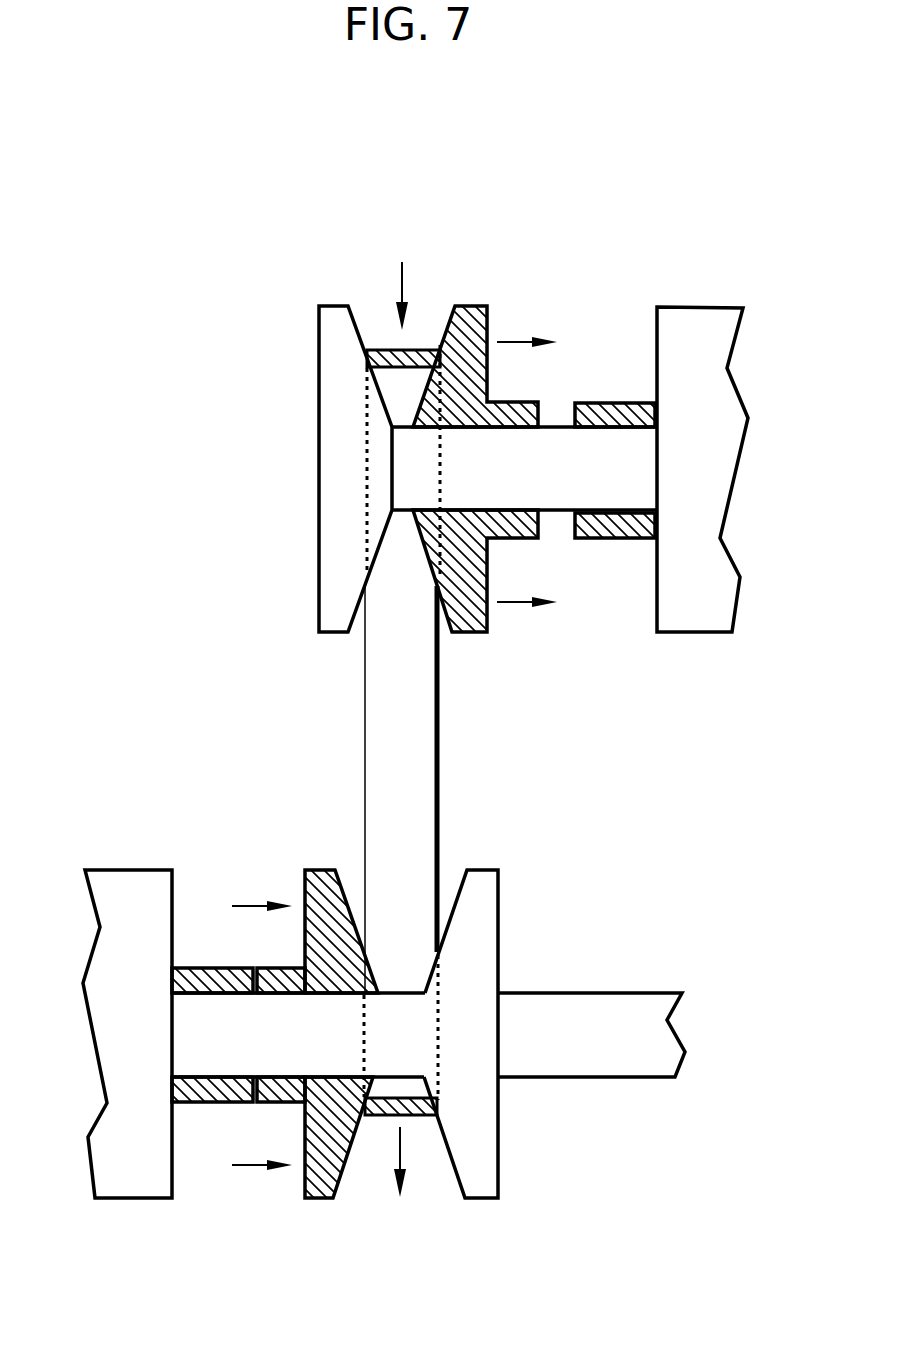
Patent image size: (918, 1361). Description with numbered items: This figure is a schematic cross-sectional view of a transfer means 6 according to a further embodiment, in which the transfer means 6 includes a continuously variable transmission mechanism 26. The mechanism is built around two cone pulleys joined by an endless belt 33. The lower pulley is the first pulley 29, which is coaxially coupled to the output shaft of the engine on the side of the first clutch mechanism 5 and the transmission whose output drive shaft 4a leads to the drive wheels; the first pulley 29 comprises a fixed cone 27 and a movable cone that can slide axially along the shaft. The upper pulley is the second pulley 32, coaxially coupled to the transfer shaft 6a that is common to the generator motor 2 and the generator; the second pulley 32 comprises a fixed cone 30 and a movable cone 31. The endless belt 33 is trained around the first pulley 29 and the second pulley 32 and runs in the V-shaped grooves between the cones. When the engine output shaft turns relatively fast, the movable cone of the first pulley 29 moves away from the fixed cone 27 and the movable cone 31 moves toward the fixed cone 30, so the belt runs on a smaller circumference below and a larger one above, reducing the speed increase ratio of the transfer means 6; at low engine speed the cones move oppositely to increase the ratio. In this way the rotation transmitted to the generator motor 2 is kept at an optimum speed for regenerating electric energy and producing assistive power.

The generator motor 2 is at (713, 307).
The first clutch mechanism 5 is at (123, 870).
The transfer means 6 is at (564, 274).
The transfer shaft 6a is at (620, 485).
The continuously variable transmission mechanism 26 is at (216, 614).
The fixed cone 27 is at (480, 1200).
The first pulley 29 is at (551, 887).
The fixed cone 30 is at (335, 305).
The movable cone 31 is at (472, 305).
The second pulley 32 is at (273, 360).
The endless belt 33 is at (440, 345).
The output drive shaft 4a is at (597, 993).